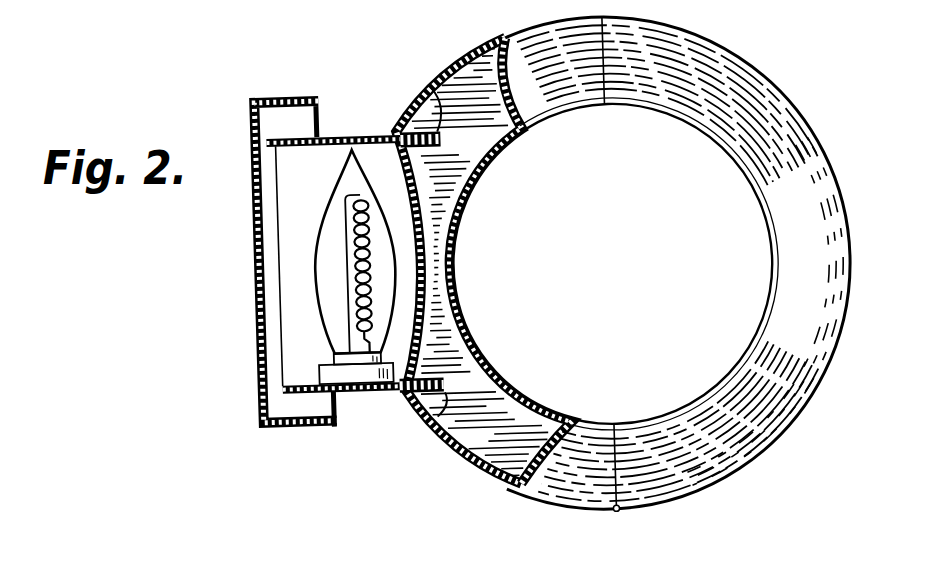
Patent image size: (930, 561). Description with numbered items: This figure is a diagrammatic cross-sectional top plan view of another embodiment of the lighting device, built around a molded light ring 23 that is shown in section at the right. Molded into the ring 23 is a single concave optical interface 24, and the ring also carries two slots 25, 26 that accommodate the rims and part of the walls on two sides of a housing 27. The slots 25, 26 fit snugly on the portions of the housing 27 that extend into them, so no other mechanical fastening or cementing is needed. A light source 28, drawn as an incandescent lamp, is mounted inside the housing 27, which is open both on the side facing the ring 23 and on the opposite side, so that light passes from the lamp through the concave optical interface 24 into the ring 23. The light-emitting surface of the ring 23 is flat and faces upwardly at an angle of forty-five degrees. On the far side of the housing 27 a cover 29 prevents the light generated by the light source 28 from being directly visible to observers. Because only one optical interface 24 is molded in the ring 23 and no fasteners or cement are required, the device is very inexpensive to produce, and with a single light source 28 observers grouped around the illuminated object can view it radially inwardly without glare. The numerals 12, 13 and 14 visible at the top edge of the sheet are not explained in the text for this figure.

The molded light ring 23 is at (725, 97).
The concave optical interface 24 is at (456, 222).
The slot 25 is at (436, 93).
The slot 26 is at (433, 422).
The housing 27 is at (366, 140).
The light source 28 is at (347, 294).
The cover 29 is at (282, 431).
The section arrow 13 is at (375, 48).
The element 14 is at (230, 13).
The element 12 is at (138, 7).